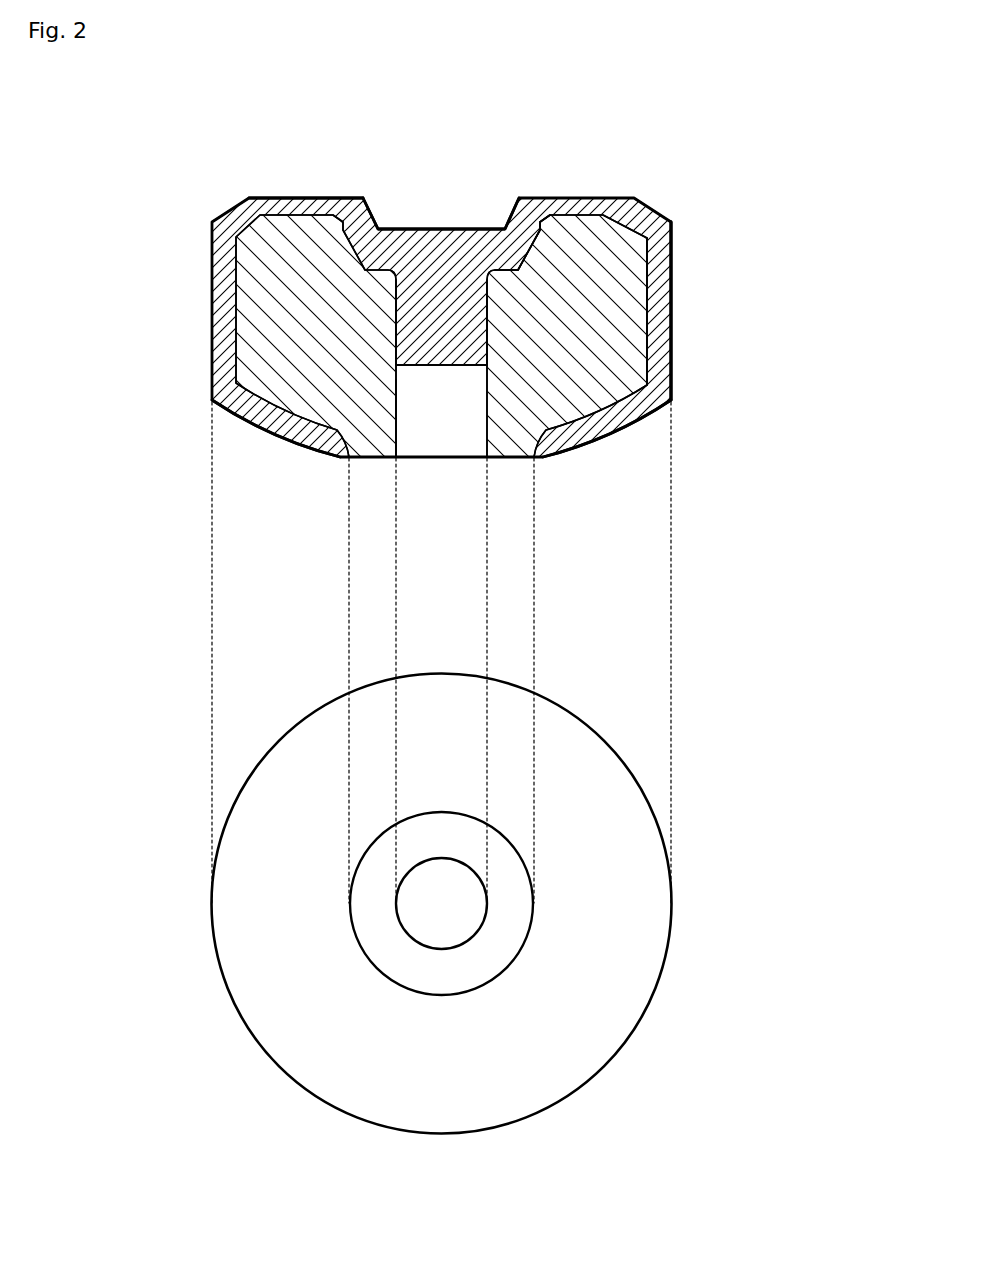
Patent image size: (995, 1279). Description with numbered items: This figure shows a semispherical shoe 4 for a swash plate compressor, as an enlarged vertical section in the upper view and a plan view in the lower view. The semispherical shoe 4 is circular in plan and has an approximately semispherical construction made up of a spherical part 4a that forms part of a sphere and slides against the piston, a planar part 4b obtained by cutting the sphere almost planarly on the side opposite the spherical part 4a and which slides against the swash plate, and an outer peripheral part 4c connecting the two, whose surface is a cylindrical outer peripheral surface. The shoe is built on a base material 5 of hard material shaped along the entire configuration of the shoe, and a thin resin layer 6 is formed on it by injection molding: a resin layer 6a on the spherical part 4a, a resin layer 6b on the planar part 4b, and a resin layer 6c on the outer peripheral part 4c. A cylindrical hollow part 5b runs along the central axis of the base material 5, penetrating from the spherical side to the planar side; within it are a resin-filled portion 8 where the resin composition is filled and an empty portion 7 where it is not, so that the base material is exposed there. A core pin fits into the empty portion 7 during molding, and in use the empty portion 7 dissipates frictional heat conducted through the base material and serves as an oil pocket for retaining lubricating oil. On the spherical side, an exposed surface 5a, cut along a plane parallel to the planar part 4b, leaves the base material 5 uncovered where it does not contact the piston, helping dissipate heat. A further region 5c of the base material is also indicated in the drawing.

The semispherical shoe 4 is at (698, 154).
The spherical part 4a is at (231, 437).
The planar part 4b is at (290, 175).
The outer peripheral part 4c is at (688, 266).
The base material 5 is at (277, 332).
The exposed surface 5a is at (513, 460).
The hollow part 5b is at (397, 398).
The upper portion of inner member 5c is at (532, 257).
The resin layer 6 is at (222, 273).
The resin layer 6a is at (637, 430).
The resin layer 6b is at (567, 205).
The resin layer 6c is at (662, 325).
The empty portion 7 is at (460, 438).
The resin-filled portion 8 is at (428, 270).